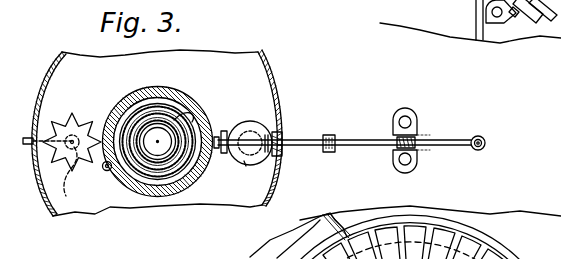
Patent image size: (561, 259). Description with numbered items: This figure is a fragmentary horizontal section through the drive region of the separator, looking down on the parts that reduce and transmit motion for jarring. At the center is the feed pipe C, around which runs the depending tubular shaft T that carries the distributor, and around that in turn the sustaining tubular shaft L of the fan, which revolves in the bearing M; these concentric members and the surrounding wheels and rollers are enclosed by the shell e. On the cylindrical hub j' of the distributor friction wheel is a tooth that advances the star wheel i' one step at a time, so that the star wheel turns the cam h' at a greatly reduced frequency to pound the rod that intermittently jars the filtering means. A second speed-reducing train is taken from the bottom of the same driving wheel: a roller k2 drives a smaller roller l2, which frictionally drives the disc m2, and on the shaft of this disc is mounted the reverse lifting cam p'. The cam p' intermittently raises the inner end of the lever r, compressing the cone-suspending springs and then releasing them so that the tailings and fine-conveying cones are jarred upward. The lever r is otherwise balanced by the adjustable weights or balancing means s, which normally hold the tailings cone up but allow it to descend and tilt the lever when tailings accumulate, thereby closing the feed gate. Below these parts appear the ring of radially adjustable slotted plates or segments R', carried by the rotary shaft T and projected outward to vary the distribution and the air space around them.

The bearing M is at (144, 112).
The feed pipe C is at (157, 128).
The tubular shaft T is at (178, 113).
The tubular shaft L is at (182, 122).
The star wheel i' is at (62, 126).
The cam h' is at (72, 177).
The cylindrical hub j' is at (104, 199).
The roller k2 is at (223, 153).
The cam p' is at (250, 128).
The disc m2 is at (254, 163).
The roller l2 is at (276, 128).
The shell e is at (164, 133).
The balancing means s is at (332, 135).
The lever r is at (417, 136).
The plates or segments R' is at (405, 232).